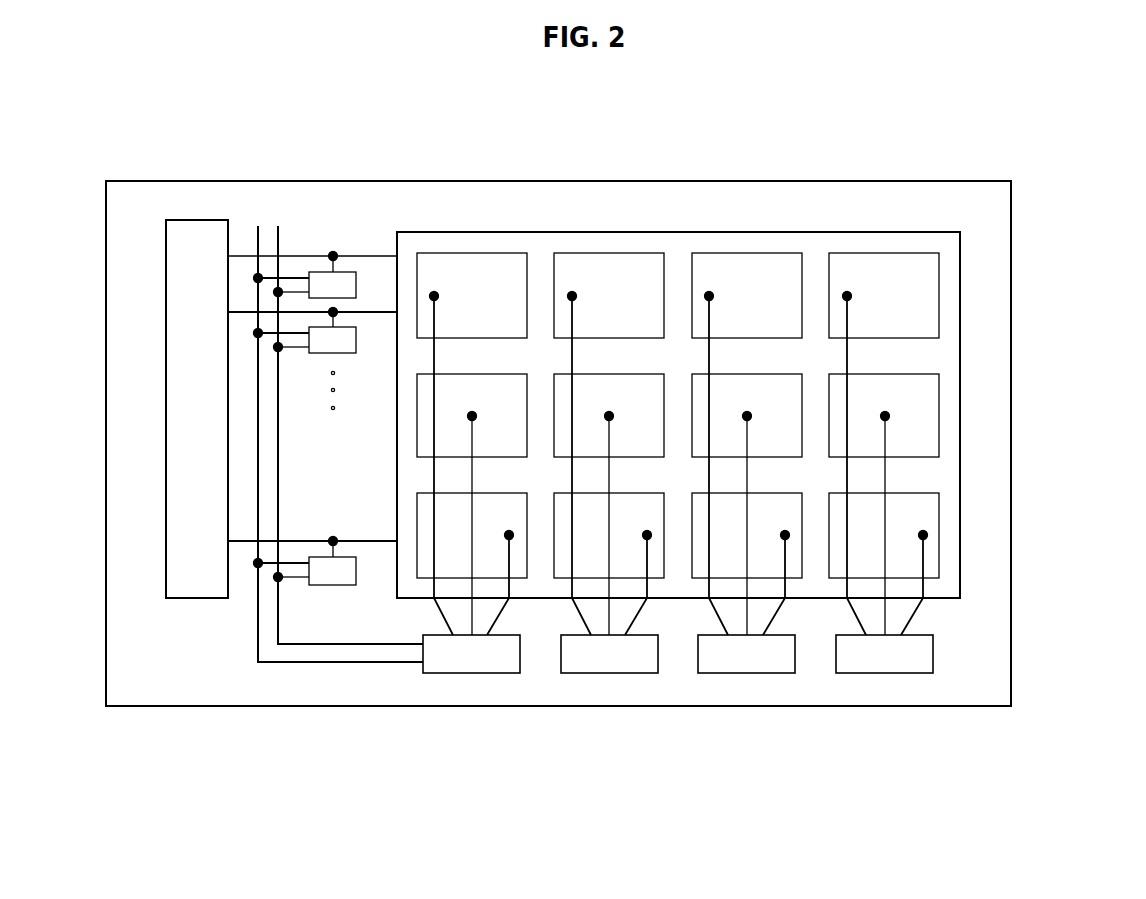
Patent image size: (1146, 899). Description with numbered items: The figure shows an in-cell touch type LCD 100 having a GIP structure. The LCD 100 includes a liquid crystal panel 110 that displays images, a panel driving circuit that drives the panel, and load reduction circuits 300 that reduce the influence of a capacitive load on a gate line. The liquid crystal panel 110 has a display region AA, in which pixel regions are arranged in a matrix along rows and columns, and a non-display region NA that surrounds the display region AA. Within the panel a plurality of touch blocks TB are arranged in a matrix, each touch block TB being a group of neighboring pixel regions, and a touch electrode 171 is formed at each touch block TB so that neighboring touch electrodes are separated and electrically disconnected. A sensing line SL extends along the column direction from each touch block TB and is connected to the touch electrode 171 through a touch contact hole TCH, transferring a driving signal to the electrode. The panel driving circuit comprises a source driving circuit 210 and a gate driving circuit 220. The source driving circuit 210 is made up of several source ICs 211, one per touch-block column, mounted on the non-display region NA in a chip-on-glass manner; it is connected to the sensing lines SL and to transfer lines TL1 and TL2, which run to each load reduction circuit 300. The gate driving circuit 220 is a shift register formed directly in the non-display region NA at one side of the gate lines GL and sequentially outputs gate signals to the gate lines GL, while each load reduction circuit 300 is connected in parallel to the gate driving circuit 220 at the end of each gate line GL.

The LCD 100 is at (628, 871).
The liquid crystal panel 110 is at (1011, 255).
The gate driving circuit 220 is at (181, 423).
The load reduction circuit 300 is at (317, 296).
The source IC 211 is at (678, 654).
The source driving circuit 210 is at (678, 730).
The touch electrode 171 is at (939, 295).
The touch block TB is at (774, 415).
The touch contact hole TCH is at (885, 416).
The sensing line SL is at (885, 480).
The gate line GL is at (363, 256).
The first transfer line TL1 is at (278, 398).
The second transfer line TL2 is at (258, 365).
The display region AA is at (676, 242).
The non-display region NA is at (778, 210).